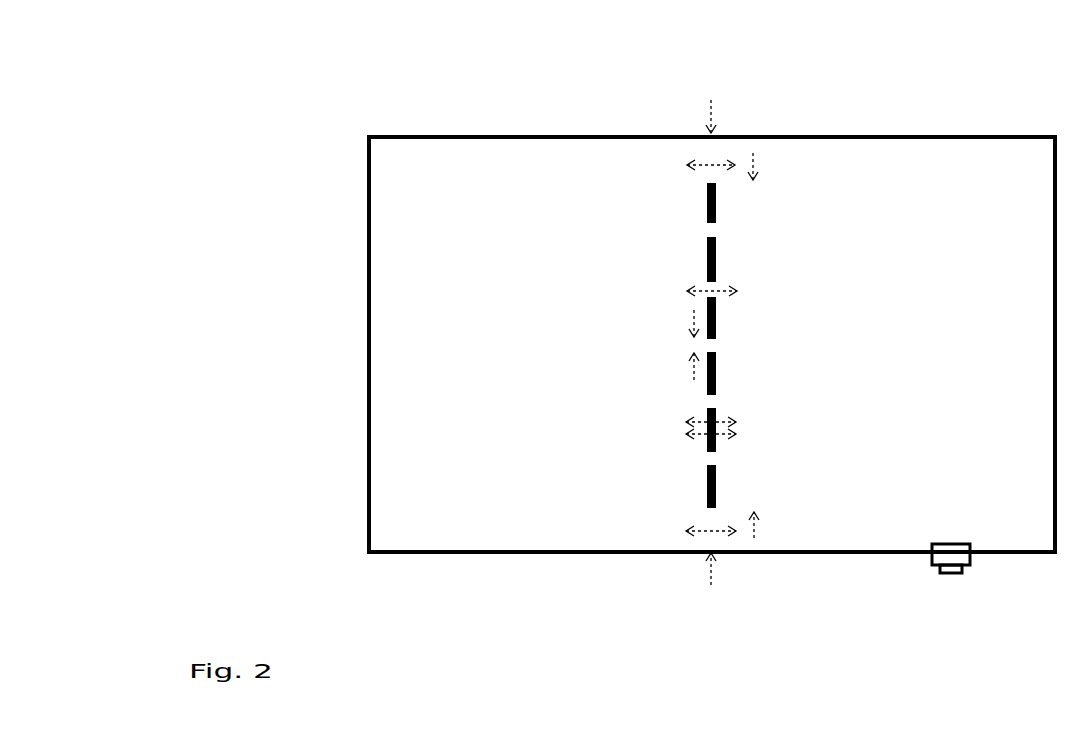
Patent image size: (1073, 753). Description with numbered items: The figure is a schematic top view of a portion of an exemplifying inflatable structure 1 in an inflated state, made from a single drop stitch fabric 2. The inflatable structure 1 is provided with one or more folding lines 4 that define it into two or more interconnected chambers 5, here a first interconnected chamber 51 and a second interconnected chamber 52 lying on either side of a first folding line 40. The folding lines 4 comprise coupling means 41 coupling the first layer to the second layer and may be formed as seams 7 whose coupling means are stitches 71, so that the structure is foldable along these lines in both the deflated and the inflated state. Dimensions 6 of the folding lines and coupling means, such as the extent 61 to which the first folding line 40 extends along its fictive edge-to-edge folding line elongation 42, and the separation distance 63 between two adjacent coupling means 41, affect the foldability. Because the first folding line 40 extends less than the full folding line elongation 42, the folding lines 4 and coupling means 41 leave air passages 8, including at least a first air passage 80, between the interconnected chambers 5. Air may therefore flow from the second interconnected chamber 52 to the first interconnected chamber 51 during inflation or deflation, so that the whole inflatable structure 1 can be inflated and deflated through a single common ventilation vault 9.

The inflatable structure 1 is at (343, 118).
The drop stitch fabric 2 is at (333, 450).
The interconnected chambers 5 is at (712, 319).
The first interconnected chamber 51 is at (491, 156).
The second interconnected chamber 52 is at (839, 157).
The folding lines 4 is at (626, 356).
The first folding line 40 is at (626, 356).
The seams 7 is at (652, 480).
The coupling means 41 is at (661, 232).
The stitches 71 is at (690, 211).
The air passages 8 is at (681, 350).
The first air passage 80 is at (680, 350).
The separation distance 63 is at (674, 345).
The dimensions 6 is at (771, 319).
The extent 61 is at (771, 319).
The folding line elongation 42 is at (726, 574).
The ventilation vault 9 is at (948, 575).